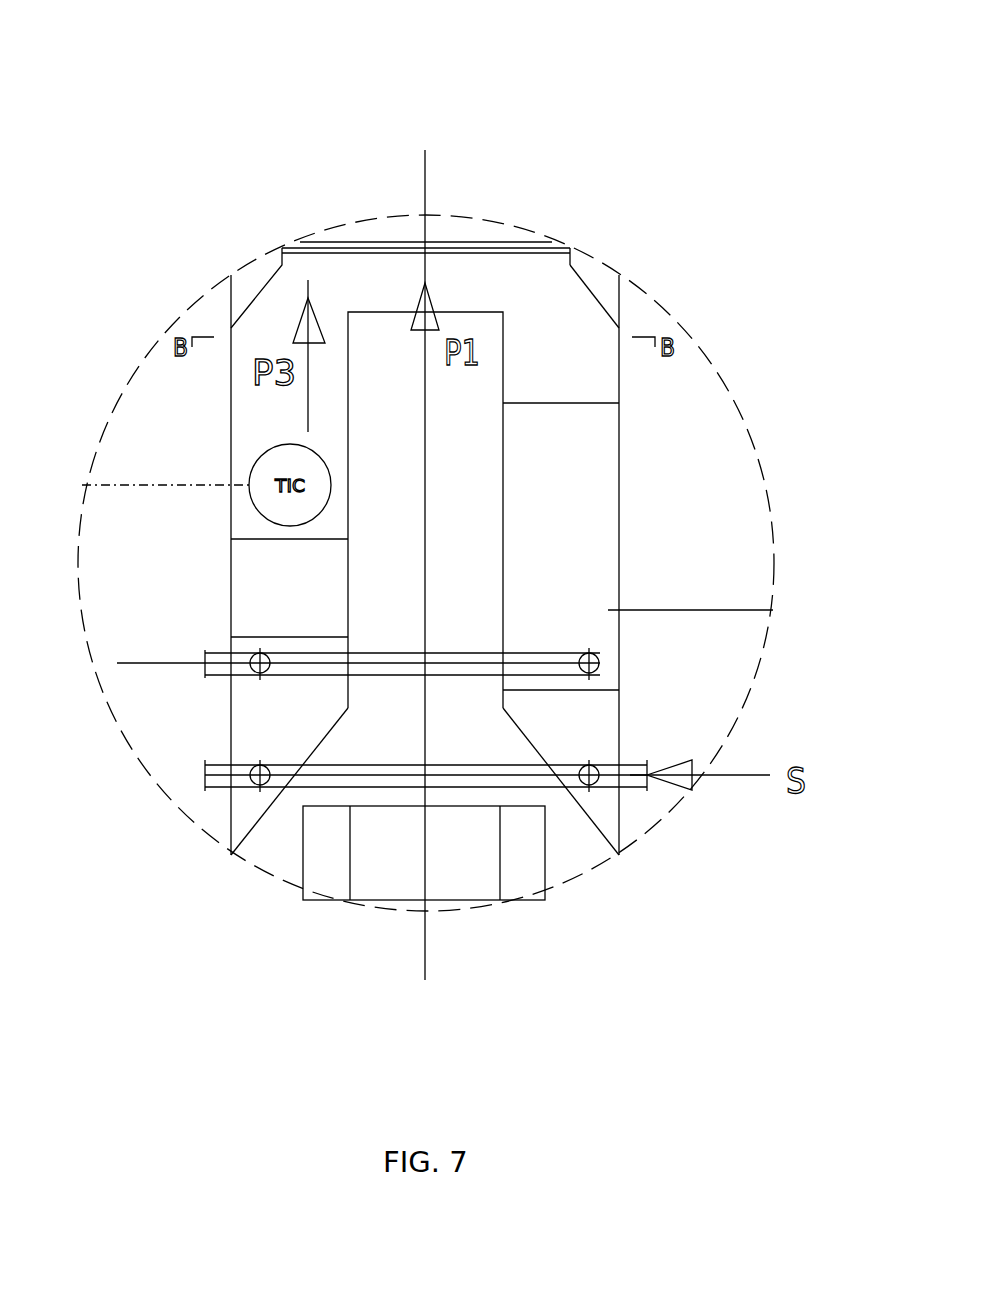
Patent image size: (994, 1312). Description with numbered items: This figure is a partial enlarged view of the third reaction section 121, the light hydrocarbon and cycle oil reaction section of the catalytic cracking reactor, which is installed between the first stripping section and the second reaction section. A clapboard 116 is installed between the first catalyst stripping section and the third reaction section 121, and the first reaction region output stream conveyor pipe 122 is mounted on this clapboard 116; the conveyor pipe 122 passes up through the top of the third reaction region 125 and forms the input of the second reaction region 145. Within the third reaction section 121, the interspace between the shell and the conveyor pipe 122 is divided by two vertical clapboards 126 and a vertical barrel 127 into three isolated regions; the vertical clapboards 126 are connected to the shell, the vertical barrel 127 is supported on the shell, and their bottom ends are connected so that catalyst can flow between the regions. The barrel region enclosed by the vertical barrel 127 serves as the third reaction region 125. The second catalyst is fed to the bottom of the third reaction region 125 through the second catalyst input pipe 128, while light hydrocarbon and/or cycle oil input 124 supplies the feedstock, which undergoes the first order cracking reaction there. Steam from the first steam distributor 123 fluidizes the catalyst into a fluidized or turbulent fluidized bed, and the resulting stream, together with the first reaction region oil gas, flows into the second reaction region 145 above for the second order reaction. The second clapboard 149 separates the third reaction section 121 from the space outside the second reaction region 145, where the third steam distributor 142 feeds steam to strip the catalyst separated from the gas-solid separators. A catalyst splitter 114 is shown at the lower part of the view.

The catalyst splitter 114 is at (483, 952).
The clapboards 116 is at (645, 804).
The third reaction section 121 is at (681, 565).
The first reaction region output stream conveyor pipe 122 is at (523, 576).
The first steam distributor 123 is at (475, 885).
The light hydrocarbon and/or cycle oil input 124 is at (317, 727).
The third reaction region 125 is at (151, 554).
The vertical clapboard 126 is at (186, 633).
The vertical barrel 127 is at (611, 702).
The second catalyst input pipe 128 is at (711, 667).
The third steam distributor 142 is at (469, 168).
The second reaction region 145 is at (431, 133).
The second clapboard 149 is at (636, 240).